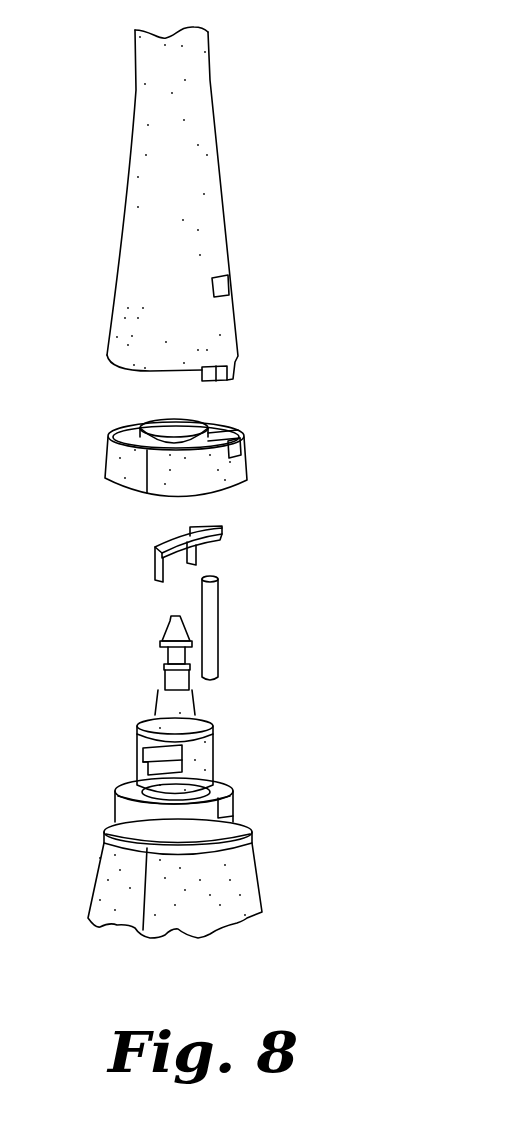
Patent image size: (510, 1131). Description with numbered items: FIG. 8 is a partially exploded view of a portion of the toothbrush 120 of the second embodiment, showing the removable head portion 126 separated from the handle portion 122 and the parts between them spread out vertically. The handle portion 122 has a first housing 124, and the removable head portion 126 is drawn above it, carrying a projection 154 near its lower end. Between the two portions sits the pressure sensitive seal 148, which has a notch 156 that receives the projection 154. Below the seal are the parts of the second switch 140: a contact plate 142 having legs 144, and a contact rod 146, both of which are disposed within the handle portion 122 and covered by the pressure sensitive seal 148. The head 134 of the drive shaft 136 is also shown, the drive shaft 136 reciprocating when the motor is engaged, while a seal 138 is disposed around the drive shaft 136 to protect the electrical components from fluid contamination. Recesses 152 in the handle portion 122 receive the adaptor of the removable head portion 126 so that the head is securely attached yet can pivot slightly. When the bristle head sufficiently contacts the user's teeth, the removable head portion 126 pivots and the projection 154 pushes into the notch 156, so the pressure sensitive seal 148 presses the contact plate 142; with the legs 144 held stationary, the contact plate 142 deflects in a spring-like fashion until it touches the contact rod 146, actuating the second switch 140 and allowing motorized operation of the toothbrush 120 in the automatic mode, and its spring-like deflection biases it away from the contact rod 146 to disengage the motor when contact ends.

The toothbrush 120 is at (345, 466).
The handle portion 122 is at (285, 851).
The first housing 124 is at (243, 912).
The removable head portion 126 is at (290, 228).
The head 134 is at (165, 630).
The drive shaft 136 is at (167, 661).
The seal 138 is at (208, 695).
The second switch 140 is at (283, 573).
The contact plate 142 is at (193, 543).
The legs 144 is at (156, 575).
The contact rod 146 is at (218, 628).
The pressure sensitive seal 148 is at (105, 460).
The recesses 152 is at (213, 762).
The projection 154 is at (234, 379).
The notch 156 is at (247, 450).